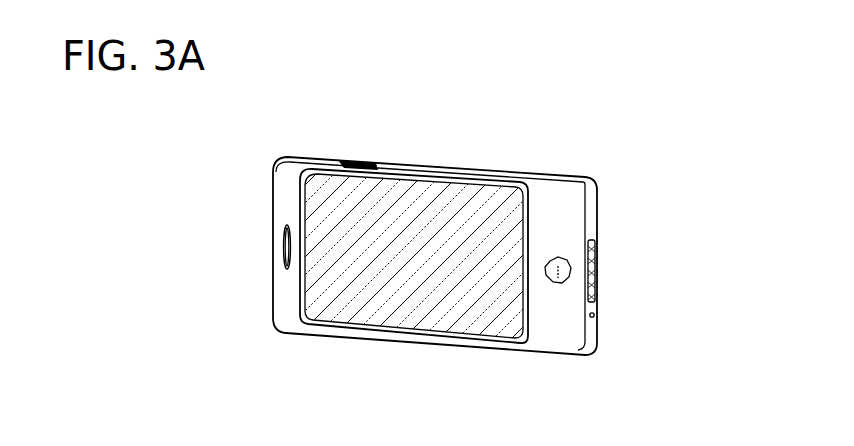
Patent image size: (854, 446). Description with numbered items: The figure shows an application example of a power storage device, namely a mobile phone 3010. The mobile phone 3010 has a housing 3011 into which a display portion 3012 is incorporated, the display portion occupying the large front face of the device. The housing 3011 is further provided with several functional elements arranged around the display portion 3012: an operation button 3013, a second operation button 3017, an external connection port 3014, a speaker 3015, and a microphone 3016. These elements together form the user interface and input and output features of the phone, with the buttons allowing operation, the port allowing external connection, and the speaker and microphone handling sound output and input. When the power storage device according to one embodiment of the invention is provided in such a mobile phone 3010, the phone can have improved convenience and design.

The mobile phone 3010 is at (541, 133).
The housing 3011 is at (552, 342).
The display portion 3012 is at (318, 217).
The operation button 3013 is at (365, 159).
The external connection port 3014 is at (597, 268).
The speaker 3015 is at (280, 255).
The microphone 3016 is at (594, 321).
The operation button 3017 is at (556, 266).